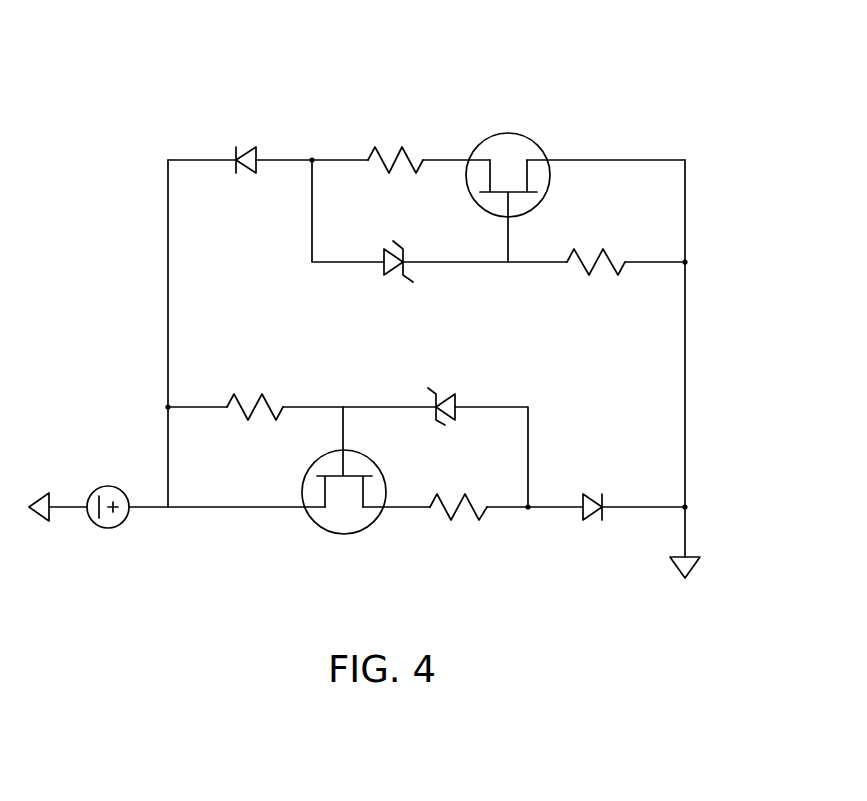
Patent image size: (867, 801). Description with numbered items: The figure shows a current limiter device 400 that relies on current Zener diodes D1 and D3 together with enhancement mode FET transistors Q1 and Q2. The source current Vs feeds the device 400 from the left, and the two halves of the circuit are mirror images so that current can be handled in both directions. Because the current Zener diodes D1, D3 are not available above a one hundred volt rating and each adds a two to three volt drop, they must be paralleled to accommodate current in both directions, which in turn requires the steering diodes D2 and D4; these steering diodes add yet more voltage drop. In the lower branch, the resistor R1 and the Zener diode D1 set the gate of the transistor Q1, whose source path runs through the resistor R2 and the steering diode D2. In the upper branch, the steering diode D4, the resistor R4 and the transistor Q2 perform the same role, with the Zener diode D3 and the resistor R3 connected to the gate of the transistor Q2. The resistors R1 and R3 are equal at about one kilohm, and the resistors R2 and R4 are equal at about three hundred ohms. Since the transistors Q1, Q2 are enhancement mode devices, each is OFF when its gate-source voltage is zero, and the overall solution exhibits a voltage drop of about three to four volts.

The current limiter device 400 is at (623, 45).
The source current VS is at (108, 528).
The steering diode D4 is at (245, 141).
The resistor R4 is at (395, 141).
The enhancement mode FET transistor Q2 is at (508, 178).
The current Zener diode D3 is at (397, 245).
The resistor R3 is at (596, 243).
The resistor R1 is at (255, 388).
The current Zener diode D1 is at (444, 390).
The enhancement mode FET transistor Q1 is at (344, 493).
The resistor R2 is at (458, 529).
The steering diode D2 is at (593, 530).